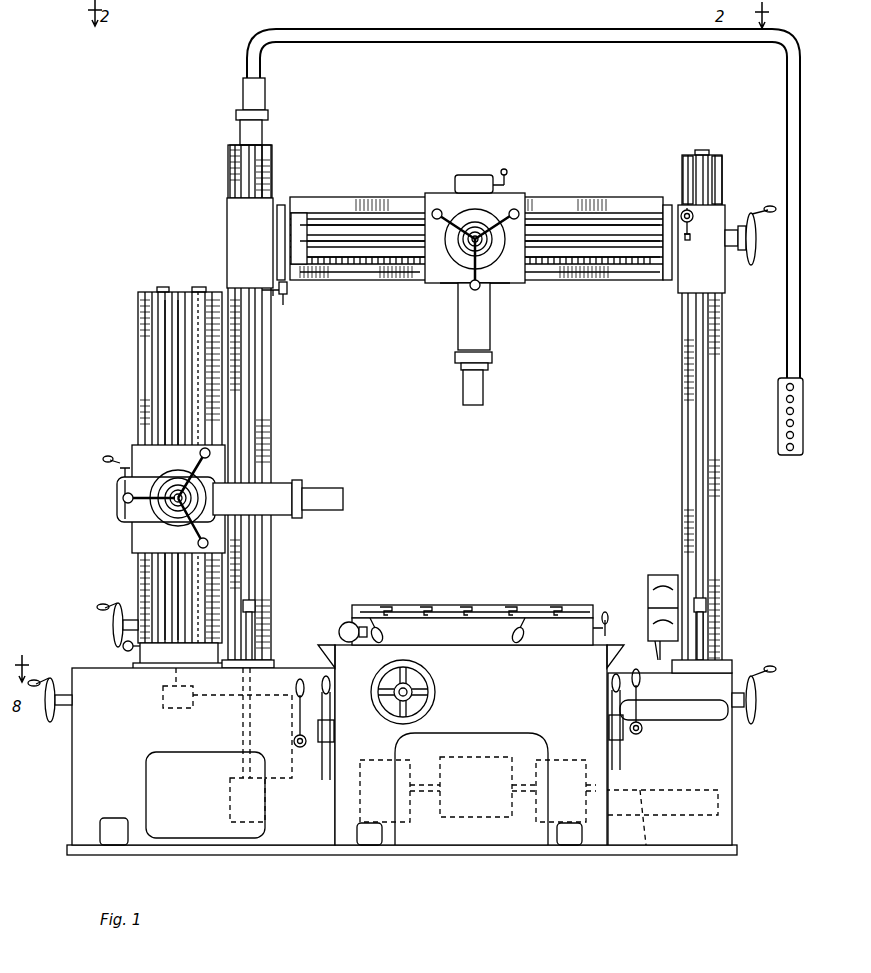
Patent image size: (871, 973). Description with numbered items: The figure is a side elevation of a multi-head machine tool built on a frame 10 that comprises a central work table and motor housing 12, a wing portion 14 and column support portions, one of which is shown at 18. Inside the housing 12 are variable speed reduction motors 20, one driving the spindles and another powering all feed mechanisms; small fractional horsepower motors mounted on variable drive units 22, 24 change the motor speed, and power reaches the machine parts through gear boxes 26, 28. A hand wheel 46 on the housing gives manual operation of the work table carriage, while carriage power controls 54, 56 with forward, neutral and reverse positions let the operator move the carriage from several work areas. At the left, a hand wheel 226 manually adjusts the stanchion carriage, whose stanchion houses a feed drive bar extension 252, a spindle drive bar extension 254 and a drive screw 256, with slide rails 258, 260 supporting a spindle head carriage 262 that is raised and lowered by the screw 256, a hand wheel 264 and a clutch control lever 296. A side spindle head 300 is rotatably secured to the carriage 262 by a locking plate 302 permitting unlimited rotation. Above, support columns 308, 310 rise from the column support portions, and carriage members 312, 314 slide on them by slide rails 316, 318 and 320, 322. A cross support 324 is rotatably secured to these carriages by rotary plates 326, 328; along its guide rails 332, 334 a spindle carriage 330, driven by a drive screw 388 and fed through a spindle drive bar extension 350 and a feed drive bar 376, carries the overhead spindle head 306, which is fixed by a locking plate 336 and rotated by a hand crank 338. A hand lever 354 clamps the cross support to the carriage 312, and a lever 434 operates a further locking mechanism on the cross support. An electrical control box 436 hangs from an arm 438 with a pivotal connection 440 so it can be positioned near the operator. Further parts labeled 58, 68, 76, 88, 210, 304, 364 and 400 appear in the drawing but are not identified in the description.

The frame 10 is at (490, 855).
The central work table and motor housing 12 is at (468, 650).
The wing portion 14 is at (88, 770).
The column support portion 18 is at (692, 731).
The variable speed reduction motors 20 is at (488, 815).
The variable drive unit 22 is at (402, 822).
The variable drive unit 24 is at (542, 822).
The gear box 26 is at (300, 822).
The gear box 28 is at (646, 845).
The hand wheel 46 is at (425, 712).
The carriage power control 54 is at (340, 740).
The carriage power control 56 is at (612, 730).
The control lever 58 is at (300, 740).
The table 68 is at (445, 612).
The table lever knob 76 is at (338, 629).
The gauge lever 88 is at (608, 618).
The table clamp lever 210 is at (392, 630).
The hand wheel 226 is at (50, 722).
The feed drive bar extension 252 is at (160, 318).
The spindle drive bar extension 254 is at (178, 360).
The drive screw 256 is at (198, 432).
The slide rail 258 is at (150, 388).
The slide rail 260 is at (228, 298).
The spindle head carriage 262 is at (140, 452).
The hand wheel 264 is at (105, 610).
The clutch control lever 296 is at (124, 648).
The spindle head 300 is at (262, 482).
The locking plate 302 is at (170, 528).
The clamp handle 304 is at (118, 468).
The spindle head 306 is at (483, 318).
The support column 308 is at (262, 605).
The support column 310 is at (712, 602).
The carriage member 312 is at (240, 215).
The carriage member 314 is at (720, 224).
The slide rail 316 is at (262, 172).
The slide rail 318 is at (238, 162).
The slide rail 320 is at (715, 190).
The slide rail 322 is at (688, 168).
The cross support 324 is at (372, 197).
The rotary plate 326 is at (300, 213).
The rotary plate 328 is at (655, 272).
The spindle carriage 330 is at (455, 283).
The guide rail 332 is at (336, 280).
The guide rail 334 is at (430, 197).
The locking plate 336 is at (497, 262).
The hand crank 338 is at (504, 172).
The spindle drive bar extension 350 is at (360, 264).
The hand lever 354 is at (283, 305).
The right column 364 is at (697, 388).
The feed drive bar 376 is at (322, 213).
The drive screw 388 is at (560, 264).
The hand crank 400 is at (752, 252).
The lever 434 is at (682, 300).
The electrical control box 436 is at (778, 435).
The arm 438 is at (500, 35).
The pivotal connection 440 is at (245, 88).